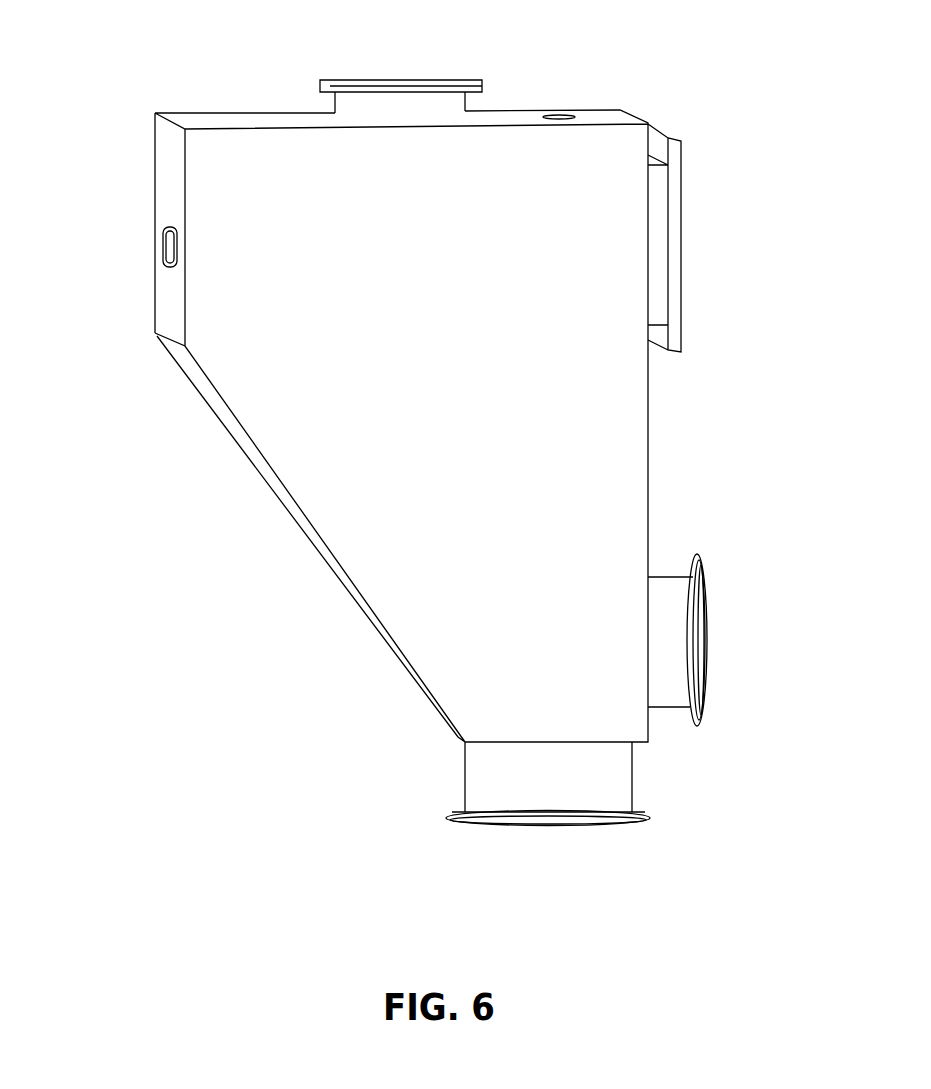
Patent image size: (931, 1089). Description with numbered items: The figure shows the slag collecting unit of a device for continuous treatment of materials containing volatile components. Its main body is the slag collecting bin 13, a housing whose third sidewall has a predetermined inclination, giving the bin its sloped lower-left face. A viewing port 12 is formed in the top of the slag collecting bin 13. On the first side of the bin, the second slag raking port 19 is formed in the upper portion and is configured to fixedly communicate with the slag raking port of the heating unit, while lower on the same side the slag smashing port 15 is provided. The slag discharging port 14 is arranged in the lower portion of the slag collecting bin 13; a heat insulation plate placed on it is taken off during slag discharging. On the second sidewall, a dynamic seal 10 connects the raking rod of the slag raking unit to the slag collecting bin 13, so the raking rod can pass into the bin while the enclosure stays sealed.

The dynamic seal 10 is at (163, 227).
The viewing port 12 is at (395, 107).
The slag collecting bin 13 is at (387, 507).
The slag discharging port 14 is at (482, 772).
The slag smashing port 15 is at (673, 630).
The second slag raking port 19 is at (667, 190).